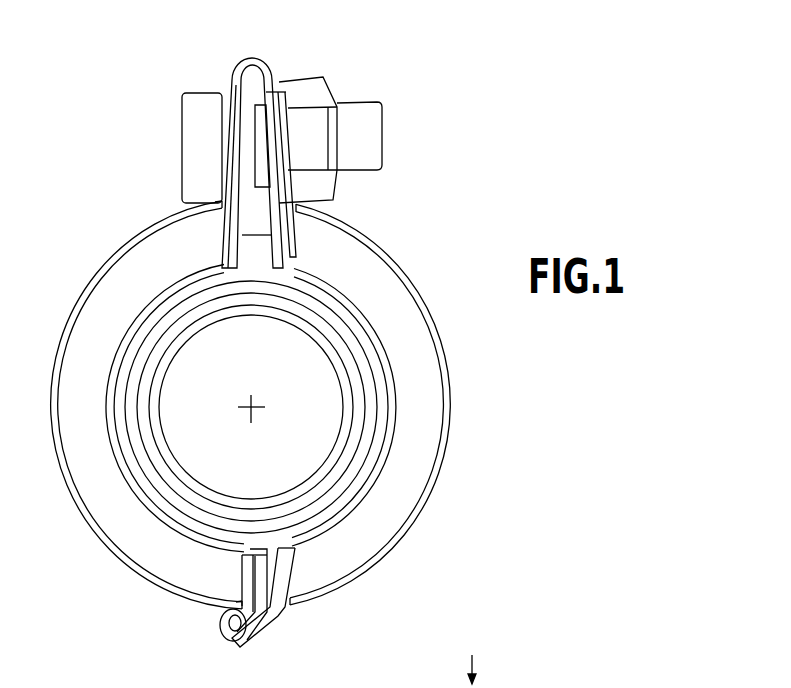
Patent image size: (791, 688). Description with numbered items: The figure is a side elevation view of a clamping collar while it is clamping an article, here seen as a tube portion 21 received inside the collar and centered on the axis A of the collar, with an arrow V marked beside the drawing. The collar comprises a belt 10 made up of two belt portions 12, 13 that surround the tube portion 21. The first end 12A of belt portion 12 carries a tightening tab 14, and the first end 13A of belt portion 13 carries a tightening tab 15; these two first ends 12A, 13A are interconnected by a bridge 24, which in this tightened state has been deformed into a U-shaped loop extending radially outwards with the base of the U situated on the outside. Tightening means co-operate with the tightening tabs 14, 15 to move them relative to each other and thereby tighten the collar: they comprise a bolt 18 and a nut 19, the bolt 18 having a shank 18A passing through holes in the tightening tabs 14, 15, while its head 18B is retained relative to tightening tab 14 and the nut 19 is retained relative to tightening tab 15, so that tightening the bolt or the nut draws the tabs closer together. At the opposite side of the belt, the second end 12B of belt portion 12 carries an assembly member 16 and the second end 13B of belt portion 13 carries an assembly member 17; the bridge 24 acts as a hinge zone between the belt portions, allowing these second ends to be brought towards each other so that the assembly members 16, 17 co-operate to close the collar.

The belt 10 is at (460, 392).
The first belt portion 12 is at (88, 356).
The second belt portion 13 is at (385, 287).
The first end of first belt portion 12A is at (213, 237).
The first end of second belt portion 13A is at (303, 232).
The second end of first belt portion 12B is at (233, 583).
The second end of second belt portion 13B is at (294, 583).
The tightening tab 14 is at (232, 133).
The tightening tab 15 is at (276, 130).
The assembly member 16 is at (233, 630).
The assembly member 17 is at (262, 640).
The bolt 18 is at (349, 100).
The shank 18A is at (360, 130).
The head 18B is at (185, 116).
The nut 19 is at (327, 182).
The tube portion 21 is at (243, 256).
The bridge 24 is at (252, 44).
The axis A is at (253, 407).
The viewing direction V is at (481, 669).